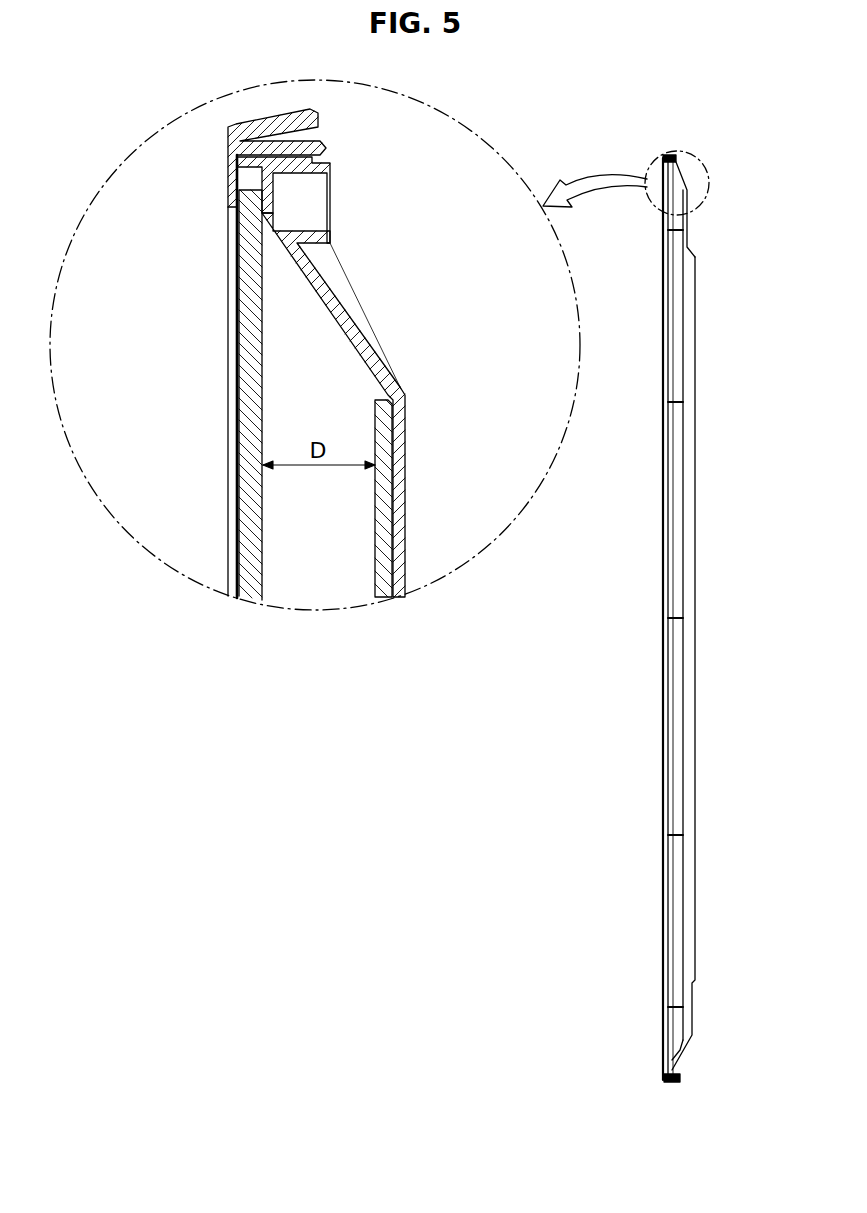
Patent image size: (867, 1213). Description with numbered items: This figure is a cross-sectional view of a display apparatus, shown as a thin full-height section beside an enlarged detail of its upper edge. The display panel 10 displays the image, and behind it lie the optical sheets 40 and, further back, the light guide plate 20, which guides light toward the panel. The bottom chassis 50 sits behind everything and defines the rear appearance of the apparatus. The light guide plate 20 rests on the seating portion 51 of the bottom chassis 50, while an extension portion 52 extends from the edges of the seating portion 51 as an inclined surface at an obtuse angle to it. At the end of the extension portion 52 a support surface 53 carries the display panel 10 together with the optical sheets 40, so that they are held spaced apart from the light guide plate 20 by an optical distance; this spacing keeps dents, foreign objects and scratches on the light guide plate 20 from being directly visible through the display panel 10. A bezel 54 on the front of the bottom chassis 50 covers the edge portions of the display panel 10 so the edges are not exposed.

The display panel 10 is at (236, 297).
The light guide plate 20 is at (376, 563).
The optical sheets 40 is at (241, 345).
The bottom chassis 50 is at (407, 543).
The seating portion 51 is at (391, 560).
The extension portion 52 is at (345, 313).
The support surface 53 is at (262, 192).
The bezel 54 is at (230, 185).